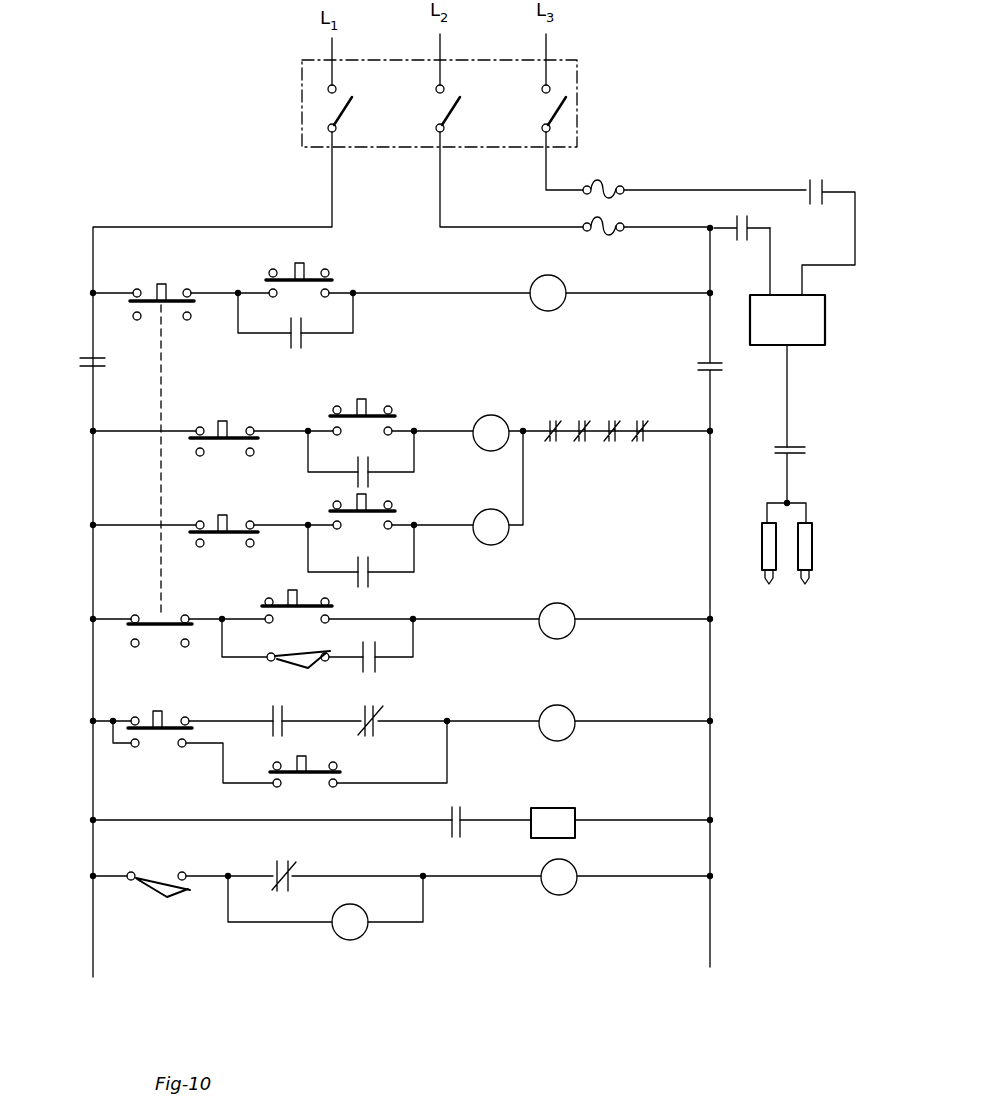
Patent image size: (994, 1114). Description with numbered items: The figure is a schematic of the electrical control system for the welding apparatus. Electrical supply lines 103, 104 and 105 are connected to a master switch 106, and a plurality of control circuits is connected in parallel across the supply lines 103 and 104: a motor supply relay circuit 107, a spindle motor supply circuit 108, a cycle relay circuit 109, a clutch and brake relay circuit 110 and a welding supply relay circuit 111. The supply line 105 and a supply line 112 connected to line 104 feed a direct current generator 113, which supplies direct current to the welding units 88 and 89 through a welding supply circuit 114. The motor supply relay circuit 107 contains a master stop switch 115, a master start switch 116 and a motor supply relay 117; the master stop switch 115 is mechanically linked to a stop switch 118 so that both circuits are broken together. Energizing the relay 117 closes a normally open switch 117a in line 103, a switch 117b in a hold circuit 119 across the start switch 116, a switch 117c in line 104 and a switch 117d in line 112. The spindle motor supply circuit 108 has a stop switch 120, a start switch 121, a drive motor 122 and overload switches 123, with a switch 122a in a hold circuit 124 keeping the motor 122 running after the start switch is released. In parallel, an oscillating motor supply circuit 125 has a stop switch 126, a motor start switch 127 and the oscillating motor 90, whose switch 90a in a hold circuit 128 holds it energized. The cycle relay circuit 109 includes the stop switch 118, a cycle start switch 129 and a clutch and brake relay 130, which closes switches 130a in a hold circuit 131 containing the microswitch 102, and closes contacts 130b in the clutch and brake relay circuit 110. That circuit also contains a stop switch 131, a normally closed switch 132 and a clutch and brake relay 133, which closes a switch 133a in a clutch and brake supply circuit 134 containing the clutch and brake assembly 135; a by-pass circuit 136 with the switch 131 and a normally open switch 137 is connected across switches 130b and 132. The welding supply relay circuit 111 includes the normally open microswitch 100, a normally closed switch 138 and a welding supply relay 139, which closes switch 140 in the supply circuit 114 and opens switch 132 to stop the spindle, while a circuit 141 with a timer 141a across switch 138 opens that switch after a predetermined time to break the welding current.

The welding unit 88 is at (760, 560).
The welding unit 89 is at (814, 558).
The oscillating motor 90 is at (492, 546).
The switch 90a is at (384, 551).
The microswitch 100 is at (152, 896).
The microswitch 102 is at (302, 651).
The electrical supply line 103 is at (330, 198).
The electrical supply line 104 is at (440, 201).
The electrical supply line 105 is at (547, 173).
The master switch 106 is at (578, 126).
The motor supply relay circuit 107 is at (428, 296).
The spindle motor supply circuit 108 is at (432, 438).
The cycle relay circuit 109 is at (452, 622).
The clutch and brake relay circuit 110 is at (470, 724).
The welding supply relay circuit 111 is at (460, 878).
The supply line 112 is at (772, 250).
The direct current generator 113 is at (828, 325).
The welding supply circuit 114 is at (790, 410).
The master stop switch 115 is at (166, 282).
The master start switch 116 is at (304, 266).
The motor supply relay 117 is at (566, 284).
The normally open switch 117a is at (80, 362).
The normally open switch 117b is at (306, 338).
The normally open switch 117c is at (826, 187).
The normally open switch 117d is at (751, 224).
The stop switch 118 is at (155, 647).
The hold circuit 119 is at (258, 335).
The stop switch 120 is at (227, 422).
The start switch 121 is at (366, 404).
The drive motor 122 is at (504, 419).
The switch 122a is at (384, 455).
The overload switches 123 is at (592, 423).
The hold circuit 124 is at (312, 472).
The oscillating motor supply circuit 125 is at (422, 528).
The stop switch 126 is at (227, 516).
The motor start switch 127 is at (366, 500).
The hold circuit 128 is at (306, 572).
The cycle start switch 129 is at (330, 614).
The clutch and brake relay 130 is at (572, 610).
The switches 130a is at (378, 664).
The contacts 130b is at (285, 712).
The hold circuit 131 is at (243, 660).
The normally closed switch 132 is at (382, 713).
The clutch and brake relay 133 is at (573, 713).
The switch 133a is at (464, 812).
The clutch and brake supply circuit 134 is at (348, 822).
The clutch and brake assembly 135 is at (560, 808).
The by-pass circuit 136 is at (366, 785).
The normally open switch 137 is at (340, 775).
The switch 138 is at (292, 864).
The welding supply relay 139 is at (576, 868).
The switch 140 is at (810, 447).
The circuit 141 is at (260, 924).
The timer 141a is at (348, 940).